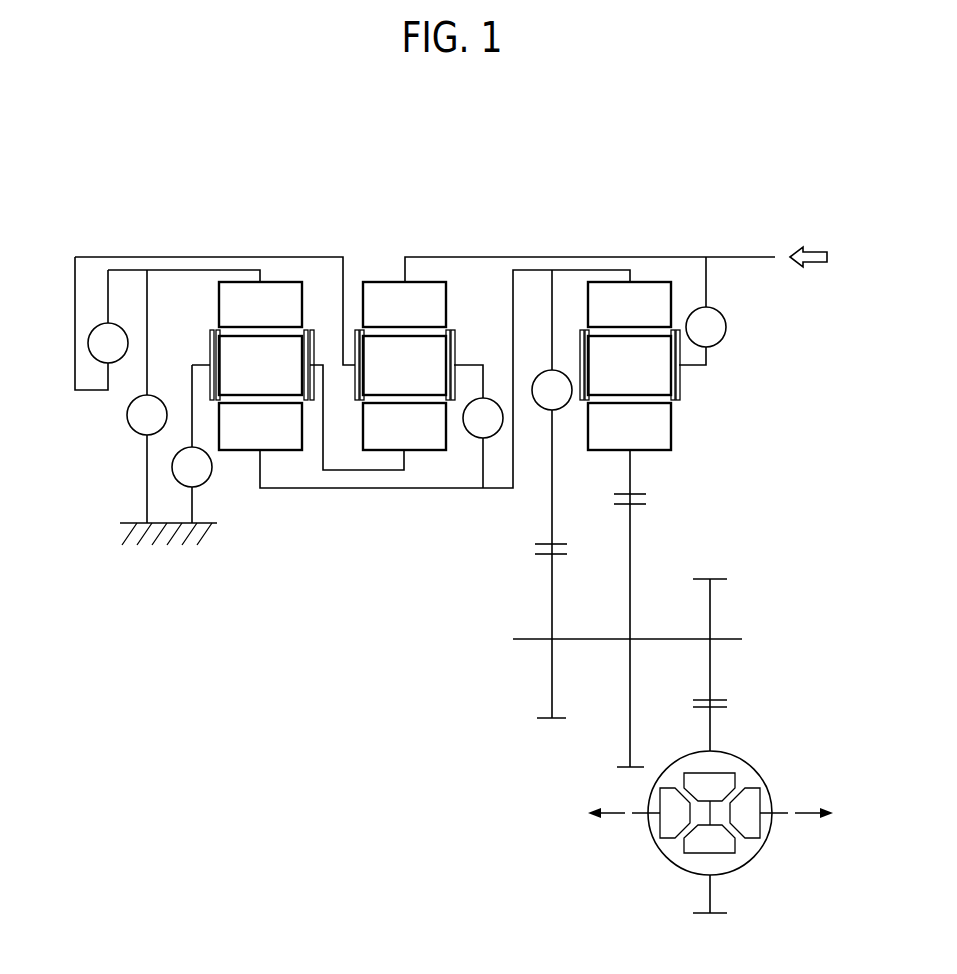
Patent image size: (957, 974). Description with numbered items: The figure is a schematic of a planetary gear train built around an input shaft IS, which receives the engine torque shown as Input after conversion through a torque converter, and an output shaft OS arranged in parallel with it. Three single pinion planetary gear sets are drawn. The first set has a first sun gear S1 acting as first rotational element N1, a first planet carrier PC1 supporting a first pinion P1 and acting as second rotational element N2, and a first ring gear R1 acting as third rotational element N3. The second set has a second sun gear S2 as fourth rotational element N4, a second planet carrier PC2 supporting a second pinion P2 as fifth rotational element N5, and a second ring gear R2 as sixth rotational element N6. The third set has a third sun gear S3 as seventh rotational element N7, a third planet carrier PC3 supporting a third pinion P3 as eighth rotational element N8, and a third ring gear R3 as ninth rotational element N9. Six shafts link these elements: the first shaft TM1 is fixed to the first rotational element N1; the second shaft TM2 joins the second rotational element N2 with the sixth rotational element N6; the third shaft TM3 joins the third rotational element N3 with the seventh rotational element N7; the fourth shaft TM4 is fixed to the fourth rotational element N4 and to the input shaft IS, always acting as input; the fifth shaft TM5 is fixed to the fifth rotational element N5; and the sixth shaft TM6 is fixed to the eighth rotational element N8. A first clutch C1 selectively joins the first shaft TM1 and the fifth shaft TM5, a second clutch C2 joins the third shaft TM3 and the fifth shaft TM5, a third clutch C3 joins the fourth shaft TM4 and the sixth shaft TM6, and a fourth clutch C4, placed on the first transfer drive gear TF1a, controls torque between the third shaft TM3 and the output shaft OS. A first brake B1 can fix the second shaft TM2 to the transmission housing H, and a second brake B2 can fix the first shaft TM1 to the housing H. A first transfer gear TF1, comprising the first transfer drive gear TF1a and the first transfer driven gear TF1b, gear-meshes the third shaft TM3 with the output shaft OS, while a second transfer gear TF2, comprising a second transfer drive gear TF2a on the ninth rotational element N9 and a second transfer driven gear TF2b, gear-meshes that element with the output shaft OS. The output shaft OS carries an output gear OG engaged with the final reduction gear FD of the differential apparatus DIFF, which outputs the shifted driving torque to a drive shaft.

The first shaft TM1 is at (203, 270).
The second shaft TM2 is at (337, 472).
The third shaft TM3 is at (390, 490).
The fourth shaft TM4 is at (547, 257).
The fifth shaft TM5 is at (307, 257).
The sixth shaft TM6 is at (706, 356).
The input shaft IS is at (728, 257).
The input (engine torque) Input is at (805, 241).
The first clutch C1 is at (101, 323).
The second clutch C2 is at (478, 426).
The third clutch C3 is at (706, 302).
The fourth clutch C4 is at (552, 494).
The first brake B1 is at (192, 444).
The second brake B2 is at (147, 396).
The transmission housing H is at (168, 537).
The first rotational element N1 is at (260, 304).
The first sun gear S1 is at (260, 304).
The second rotational element N2 is at (235, 338).
The first planet carrier PC1 is at (210, 351).
The first pinion P1 is at (260, 365).
The third rotational element N3 is at (260, 426).
The first ring gear R1 is at (260, 426).
The fourth rotational element N4 is at (404, 304).
The second sun gear S2 is at (404, 304).
The fifth rotational element N5 is at (431, 338).
The second planet carrier PC2 is at (455, 346).
The second pinion P2 is at (404, 365).
The sixth rotational element N6 is at (404, 426).
The second ring gear R2 is at (404, 426).
The seventh rotational element N7 is at (629, 304).
The third sun gear S3 is at (629, 304).
The eighth rotational element N8 is at (665, 382).
The third planet carrier PC3 is at (680, 385).
The third pinion P3 is at (629, 365).
The ninth rotational element N9 is at (629, 585).
The third ring gear R3 is at (629, 585).
The first transfer gear TF1 is at (501, 549).
The first transfer drive gear TF1a is at (536, 545).
The first transfer driven gear TF1b is at (524, 578).
The second transfer gear TF2 is at (688, 500).
The second transfer drive gear TF2a is at (645, 493).
The second transfer driven gear TF2b is at (666, 528).
The output shaft OS is at (523, 642).
The output gear OG is at (711, 607).
The final reduction gear FD is at (711, 727).
The differential apparatus DIFF is at (768, 763).